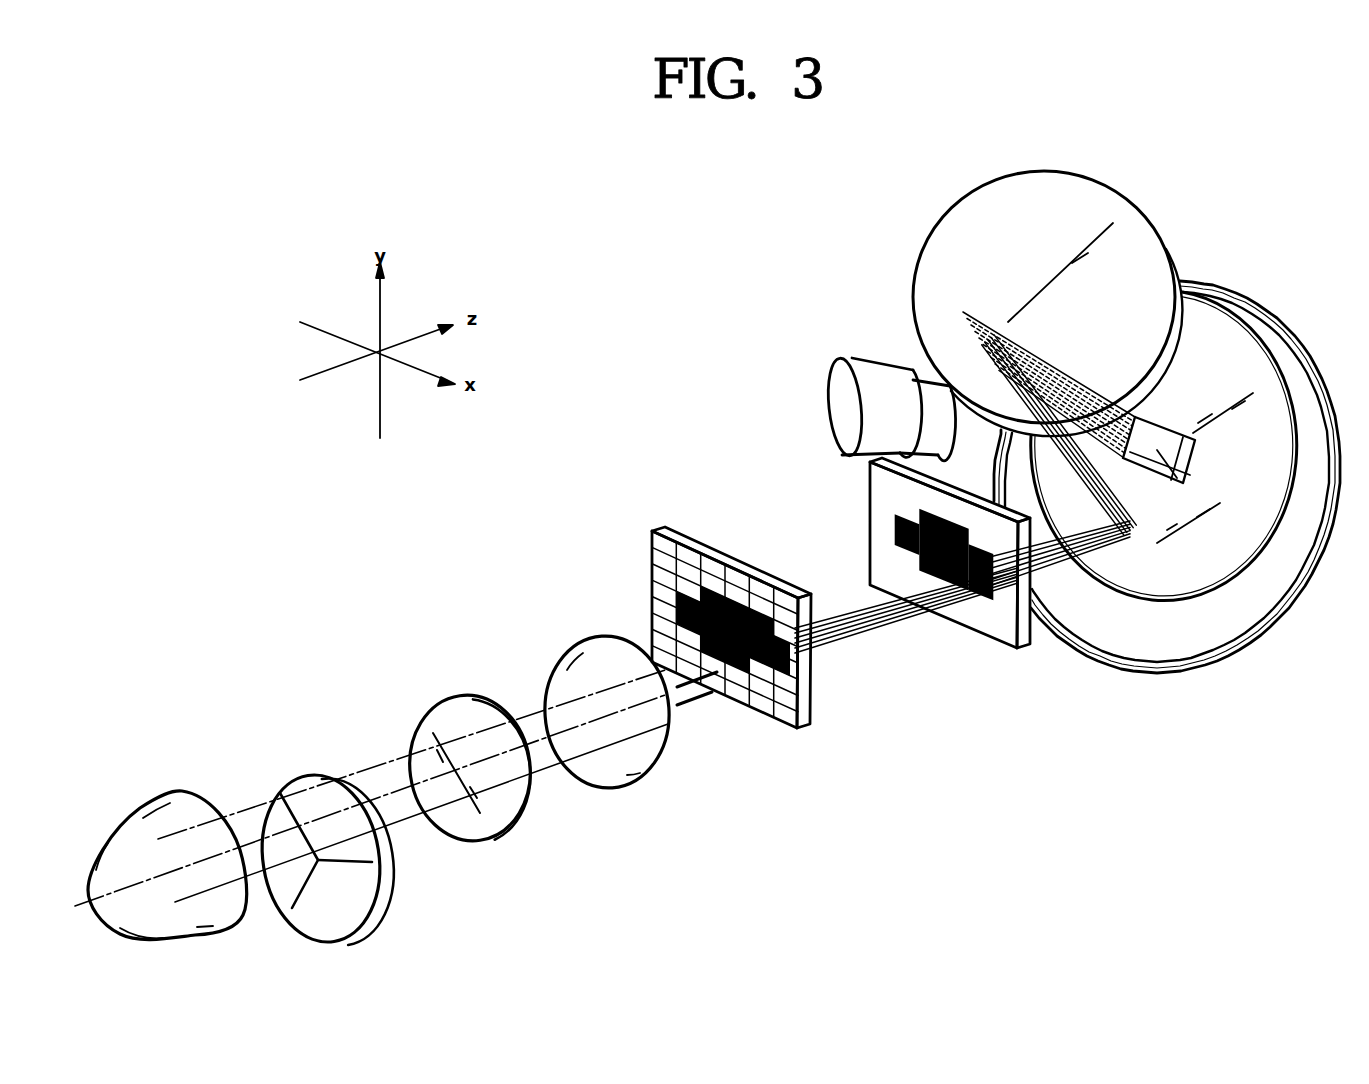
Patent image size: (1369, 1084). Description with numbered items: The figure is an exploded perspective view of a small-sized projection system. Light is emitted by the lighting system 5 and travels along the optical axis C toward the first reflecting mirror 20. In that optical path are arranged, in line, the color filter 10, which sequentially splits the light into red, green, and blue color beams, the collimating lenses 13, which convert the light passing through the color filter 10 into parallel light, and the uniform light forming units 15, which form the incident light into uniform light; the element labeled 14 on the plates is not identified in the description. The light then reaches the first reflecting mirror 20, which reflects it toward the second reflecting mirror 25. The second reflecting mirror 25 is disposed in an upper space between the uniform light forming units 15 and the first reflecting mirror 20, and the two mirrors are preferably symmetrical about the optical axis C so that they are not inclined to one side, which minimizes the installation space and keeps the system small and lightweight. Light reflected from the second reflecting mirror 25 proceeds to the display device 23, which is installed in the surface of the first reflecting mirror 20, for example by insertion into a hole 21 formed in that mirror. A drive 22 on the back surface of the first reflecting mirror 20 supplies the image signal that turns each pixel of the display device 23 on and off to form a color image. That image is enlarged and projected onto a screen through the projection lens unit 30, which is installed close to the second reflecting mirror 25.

The lighting system 5 is at (177, 825).
The color filter 10 is at (318, 780).
The collimating lenses 13 is at (583, 675).
The light pattern image 14 is at (673, 602).
The uniform light forming units 15 is at (810, 730).
The first reflecting mirror 20 is at (1180, 578).
The hole 21 is at (1135, 416).
The drive 22 is at (1270, 328).
The display device 23 is at (1182, 487).
The second reflecting mirror 25 is at (975, 212).
The projection lens unit 30 is at (882, 370).
The optical axis c is at (377, 802).